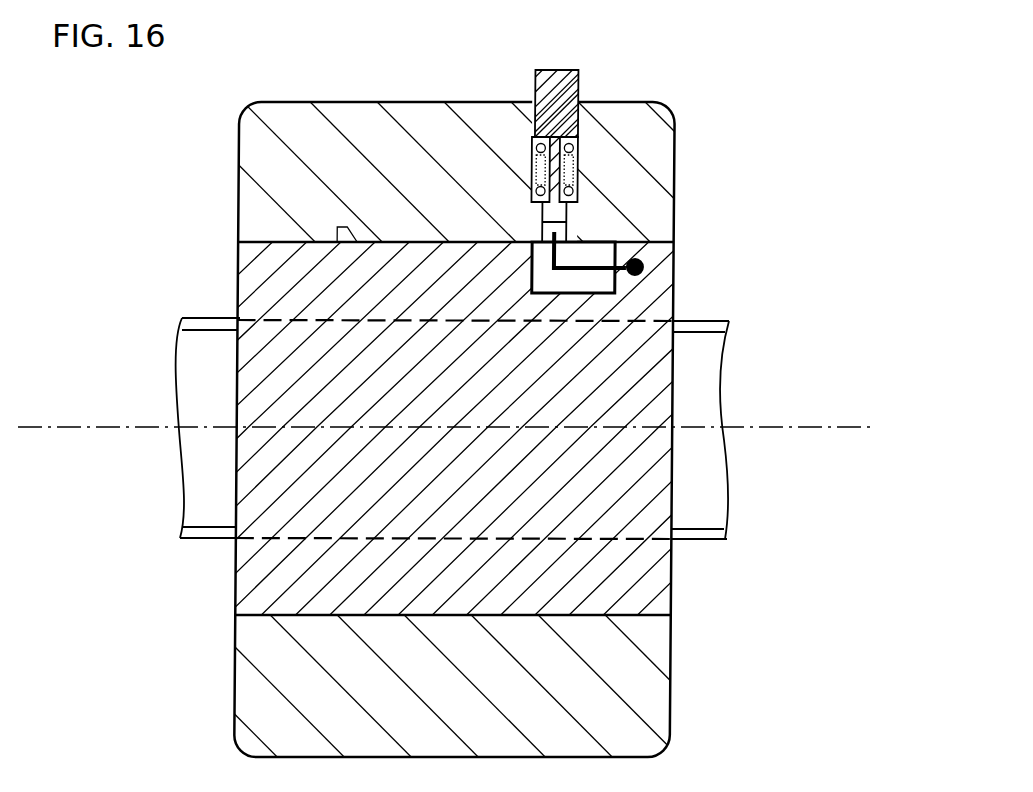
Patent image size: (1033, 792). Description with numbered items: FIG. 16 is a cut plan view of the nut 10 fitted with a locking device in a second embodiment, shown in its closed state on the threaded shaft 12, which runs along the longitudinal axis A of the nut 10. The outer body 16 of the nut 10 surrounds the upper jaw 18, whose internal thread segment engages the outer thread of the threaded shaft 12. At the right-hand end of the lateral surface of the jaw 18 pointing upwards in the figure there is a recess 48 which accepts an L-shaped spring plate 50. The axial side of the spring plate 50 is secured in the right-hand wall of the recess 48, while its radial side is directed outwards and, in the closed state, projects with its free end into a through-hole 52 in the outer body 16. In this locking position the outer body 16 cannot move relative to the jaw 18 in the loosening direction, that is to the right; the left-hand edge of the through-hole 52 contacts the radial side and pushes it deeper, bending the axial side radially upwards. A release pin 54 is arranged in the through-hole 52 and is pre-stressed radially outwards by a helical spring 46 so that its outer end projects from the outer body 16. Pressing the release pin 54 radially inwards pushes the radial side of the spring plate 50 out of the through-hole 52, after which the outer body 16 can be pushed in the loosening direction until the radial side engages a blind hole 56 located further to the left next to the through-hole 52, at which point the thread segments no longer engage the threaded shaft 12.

The nut 10 is at (288, 99).
The threaded shaft 12 is at (171, 343).
The outer body 16 is at (238, 179).
The upper jaw 18 is at (677, 588).
The helical spring 46 is at (538, 148).
The recess 48 is at (612, 312).
The spring plate 50 is at (590, 262).
The through-hole 52 is at (578, 232).
The release pin 54 is at (555, 71).
The blind hole 56 is at (338, 237).
The longitudinal axis A is at (65, 427).